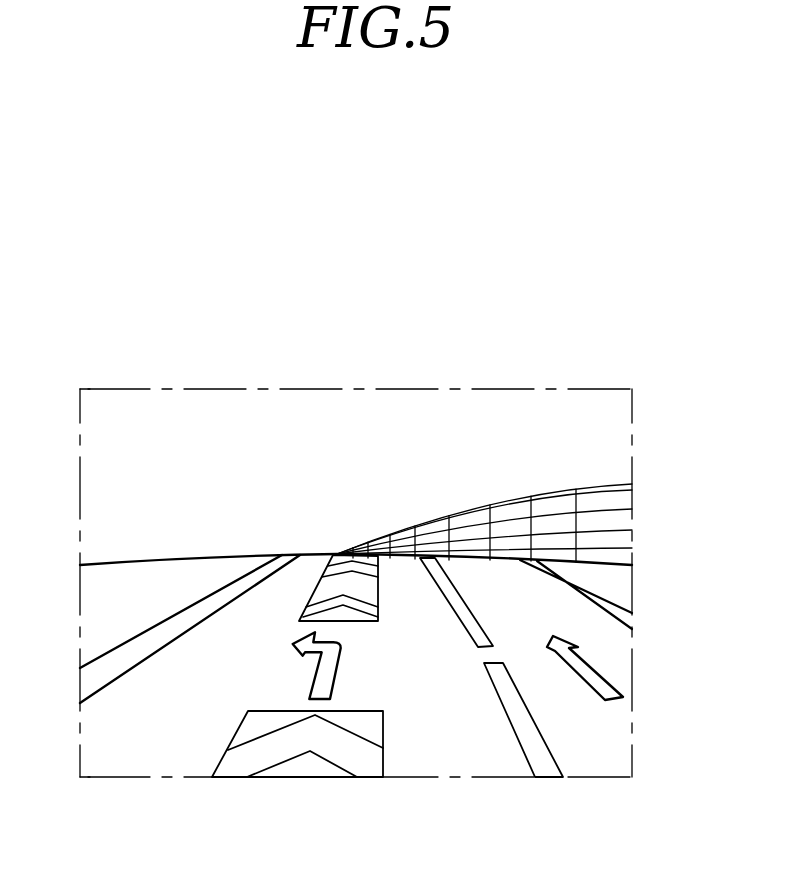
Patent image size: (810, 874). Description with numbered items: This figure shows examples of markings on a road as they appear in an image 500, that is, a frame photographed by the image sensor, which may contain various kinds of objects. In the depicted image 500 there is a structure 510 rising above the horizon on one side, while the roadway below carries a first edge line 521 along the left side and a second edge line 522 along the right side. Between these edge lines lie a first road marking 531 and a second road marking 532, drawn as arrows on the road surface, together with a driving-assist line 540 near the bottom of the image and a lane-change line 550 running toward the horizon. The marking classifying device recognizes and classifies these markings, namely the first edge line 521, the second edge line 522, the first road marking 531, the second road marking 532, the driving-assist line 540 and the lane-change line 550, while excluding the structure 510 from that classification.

The image 500 is at (361, 389).
The structure 510 is at (545, 490).
The first edge line 521 is at (160, 621).
The second edge line 522 is at (600, 597).
The first road marking 531 is at (313, 675).
The second road marking 532 is at (600, 672).
The driving-assist line 540 is at (383, 732).
The lane-change line 550 is at (547, 738).